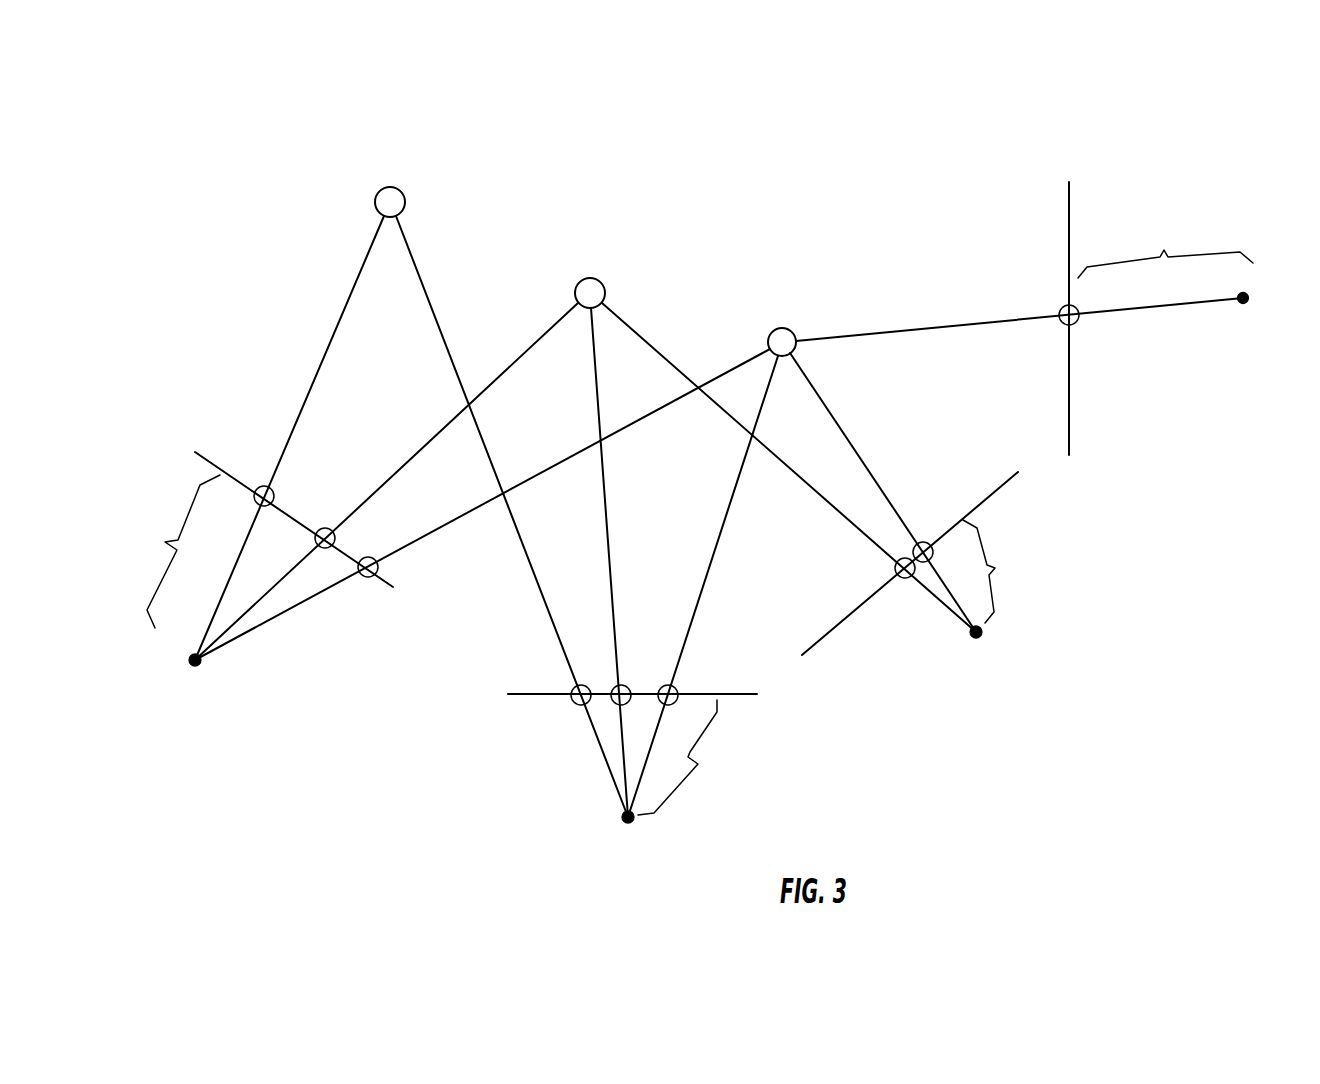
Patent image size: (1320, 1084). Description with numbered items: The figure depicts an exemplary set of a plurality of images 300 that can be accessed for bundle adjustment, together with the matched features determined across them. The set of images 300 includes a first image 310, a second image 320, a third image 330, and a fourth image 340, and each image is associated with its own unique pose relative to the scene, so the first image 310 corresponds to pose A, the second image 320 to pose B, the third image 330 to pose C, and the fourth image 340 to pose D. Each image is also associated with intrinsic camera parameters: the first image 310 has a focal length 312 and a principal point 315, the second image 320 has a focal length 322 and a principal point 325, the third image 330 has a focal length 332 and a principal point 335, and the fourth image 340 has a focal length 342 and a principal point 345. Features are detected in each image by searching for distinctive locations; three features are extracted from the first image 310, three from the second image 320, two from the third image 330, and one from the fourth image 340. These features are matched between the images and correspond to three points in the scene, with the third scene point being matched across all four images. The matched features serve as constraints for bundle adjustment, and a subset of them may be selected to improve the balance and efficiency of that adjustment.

The set of a plurality of images 300 is at (893, 222).
The first image 310 is at (204, 450).
The focal length 312 is at (176, 551).
The principal point 315 is at (203, 661).
The second image 320 is at (535, 698).
The focal length 322 is at (693, 757).
The principal point 325 is at (622, 819).
The third image 330 is at (835, 628).
The focal length 332 is at (996, 571).
The principal point 335 is at (983, 633).
The fourth image 340 is at (1070, 205).
The focal length 342 is at (1165, 250).
The principal point 345 is at (1245, 303).